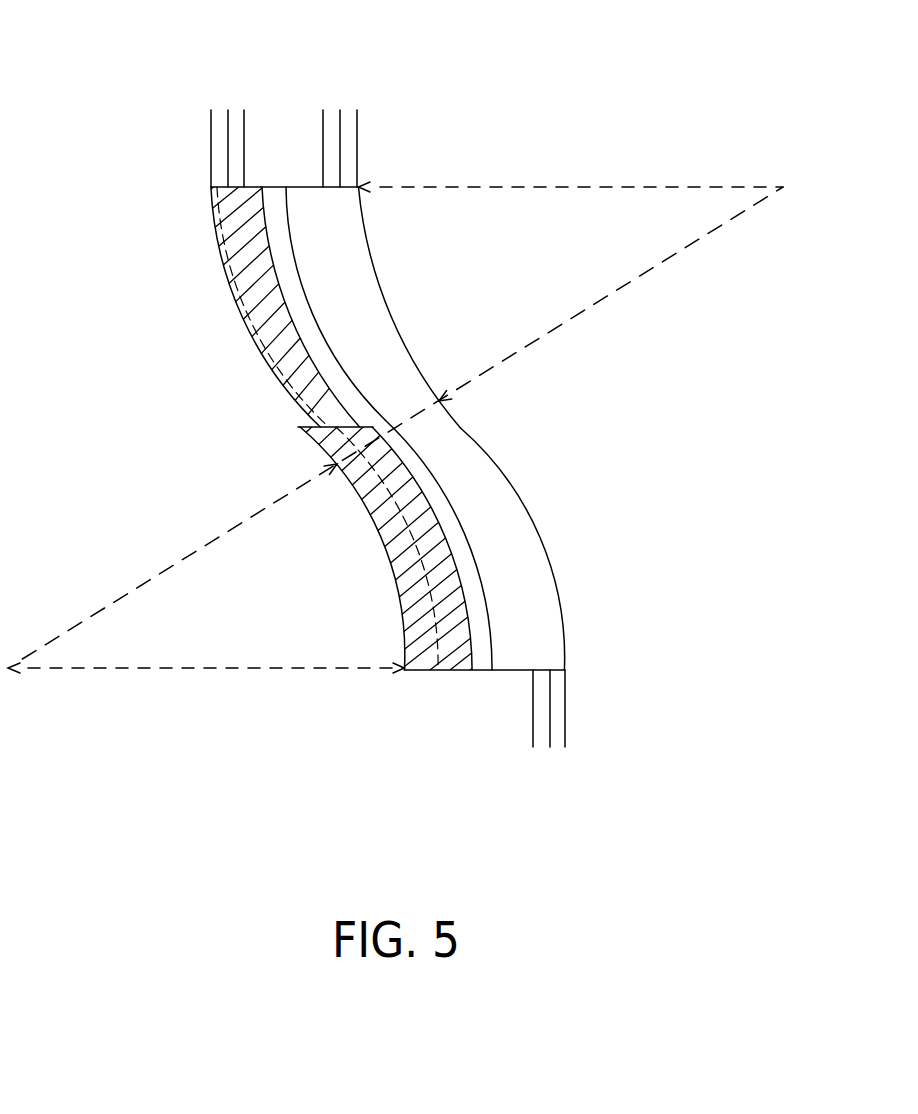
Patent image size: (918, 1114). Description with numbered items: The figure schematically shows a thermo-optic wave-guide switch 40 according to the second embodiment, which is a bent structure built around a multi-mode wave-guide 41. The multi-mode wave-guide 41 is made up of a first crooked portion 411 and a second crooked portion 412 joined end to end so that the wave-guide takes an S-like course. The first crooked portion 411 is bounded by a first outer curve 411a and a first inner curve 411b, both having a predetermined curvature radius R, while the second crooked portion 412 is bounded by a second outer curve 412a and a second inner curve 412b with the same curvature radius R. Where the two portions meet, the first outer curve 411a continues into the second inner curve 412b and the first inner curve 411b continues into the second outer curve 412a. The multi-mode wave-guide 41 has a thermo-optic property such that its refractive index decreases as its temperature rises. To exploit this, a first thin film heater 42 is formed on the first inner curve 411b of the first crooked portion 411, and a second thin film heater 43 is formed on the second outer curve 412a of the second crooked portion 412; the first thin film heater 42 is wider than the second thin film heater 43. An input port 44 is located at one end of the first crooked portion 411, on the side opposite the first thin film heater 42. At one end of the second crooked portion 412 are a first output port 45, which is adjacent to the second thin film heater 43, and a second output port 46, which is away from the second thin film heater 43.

The thermo-optic wave-guide switch 40 is at (62, 41).
The multi-mode wave-guide 41 is at (453, 428).
The first crooked portion 411 is at (540, 545).
The first outer curve 411a is at (536, 528).
The first inner curve 411b is at (430, 616).
The second crooked portion 412 is at (366, 316).
The second outer curve 412a is at (228, 282).
The second inner curve 412b is at (371, 257).
The first thin film heater 42 is at (368, 534).
The second thin film heater 43 is at (219, 267).
The input port 44 is at (556, 708).
The first output port 45 is at (215, 148).
The second output port 46 is at (350, 143).